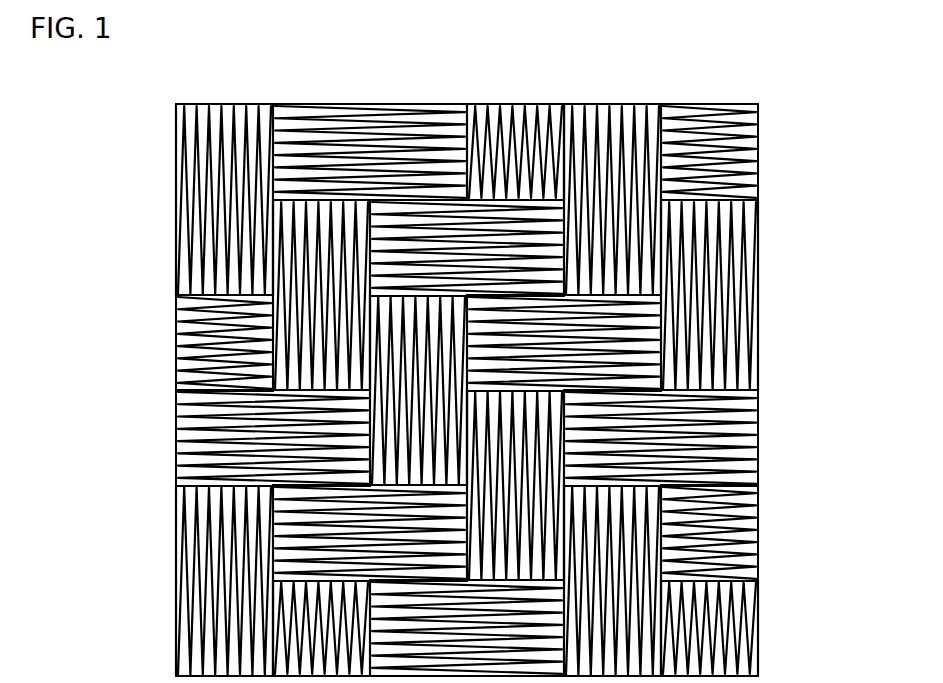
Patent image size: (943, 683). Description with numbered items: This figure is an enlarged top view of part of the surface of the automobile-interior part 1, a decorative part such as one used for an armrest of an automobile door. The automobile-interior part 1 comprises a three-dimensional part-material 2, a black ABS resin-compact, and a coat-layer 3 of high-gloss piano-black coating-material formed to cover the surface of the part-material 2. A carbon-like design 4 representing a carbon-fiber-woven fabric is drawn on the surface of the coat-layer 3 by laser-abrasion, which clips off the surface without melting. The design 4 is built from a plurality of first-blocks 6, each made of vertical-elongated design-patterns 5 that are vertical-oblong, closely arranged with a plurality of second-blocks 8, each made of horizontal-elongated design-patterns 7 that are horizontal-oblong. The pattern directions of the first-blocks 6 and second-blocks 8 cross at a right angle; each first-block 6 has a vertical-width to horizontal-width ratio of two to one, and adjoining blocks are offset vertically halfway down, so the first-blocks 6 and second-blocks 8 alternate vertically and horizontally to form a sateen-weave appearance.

The automobile-interior part 1 is at (808, 104).
The part-material 2 is at (765, 205).
The coat-layer 3 is at (197, 175).
The carbon-like design 4 is at (203, 193).
The vertical-elongated design-pattern 5 is at (253, 106).
The first-block 6 is at (469, 362).
The horizontal-elongated design-pattern 7 is at (451, 112).
The second-block 8 is at (467, 362).